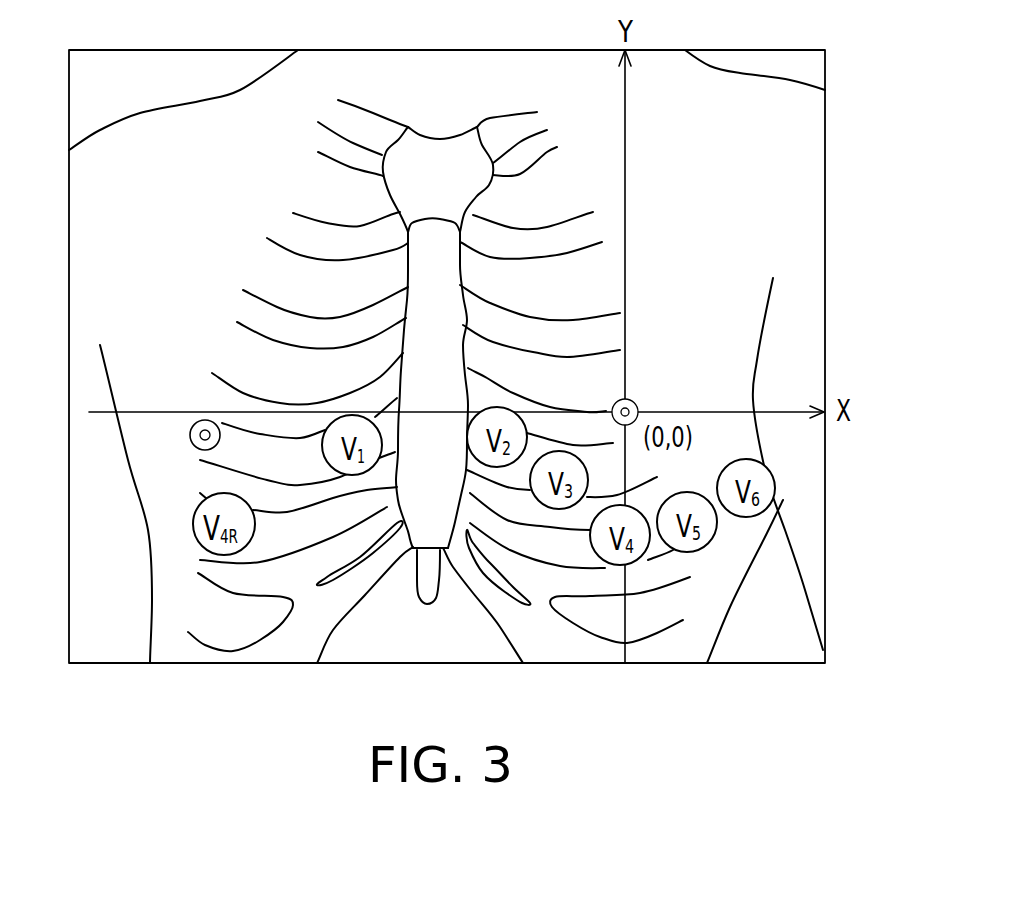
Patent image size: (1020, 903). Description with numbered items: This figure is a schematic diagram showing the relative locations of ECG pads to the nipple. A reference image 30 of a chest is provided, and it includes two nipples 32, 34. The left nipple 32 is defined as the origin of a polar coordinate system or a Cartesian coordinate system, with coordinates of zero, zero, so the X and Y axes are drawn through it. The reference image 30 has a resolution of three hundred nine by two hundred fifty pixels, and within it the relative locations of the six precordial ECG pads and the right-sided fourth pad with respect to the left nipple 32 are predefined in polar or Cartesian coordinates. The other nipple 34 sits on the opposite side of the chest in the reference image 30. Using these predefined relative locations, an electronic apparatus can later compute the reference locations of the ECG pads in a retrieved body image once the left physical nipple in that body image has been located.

The reference image 30 is at (825, 173).
The left nipple 32 is at (634, 403).
The nipple 34 is at (190, 435).